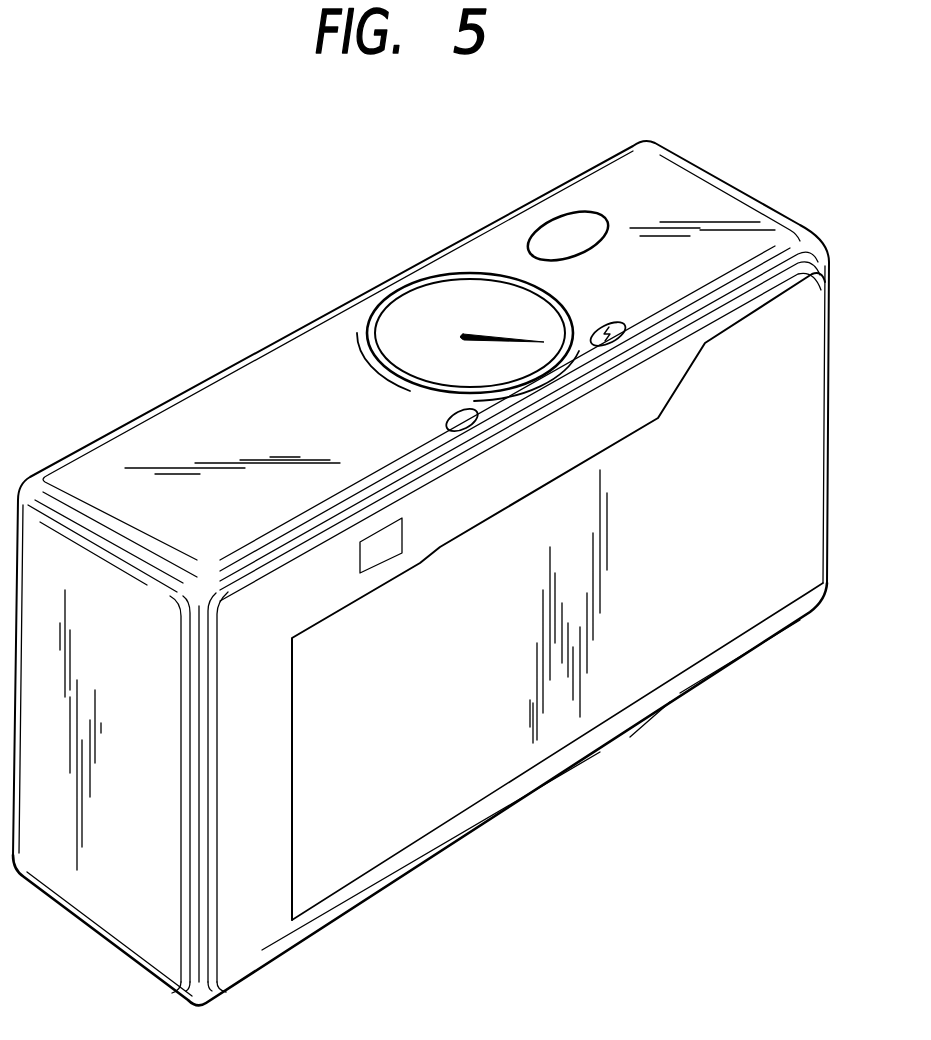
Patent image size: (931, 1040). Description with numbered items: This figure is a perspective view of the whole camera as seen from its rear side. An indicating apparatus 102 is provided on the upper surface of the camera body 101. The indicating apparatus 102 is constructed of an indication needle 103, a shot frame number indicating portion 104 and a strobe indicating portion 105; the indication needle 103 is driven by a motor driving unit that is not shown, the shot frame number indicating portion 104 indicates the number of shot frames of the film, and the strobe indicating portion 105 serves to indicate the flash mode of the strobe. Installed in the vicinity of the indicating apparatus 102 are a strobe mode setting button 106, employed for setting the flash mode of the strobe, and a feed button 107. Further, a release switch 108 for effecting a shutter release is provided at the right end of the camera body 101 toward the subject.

The camera body 101 is at (119, 905).
The indicating apparatus 102 is at (430, 323).
The indication needle 103 is at (468, 337).
The shot frame number indicating portion 104 is at (458, 272).
The strobe indicating portion 105 is at (367, 368).
The strobe mode setting button 106 is at (613, 326).
The feed button 107 is at (472, 418).
The release switch 108 is at (572, 222).